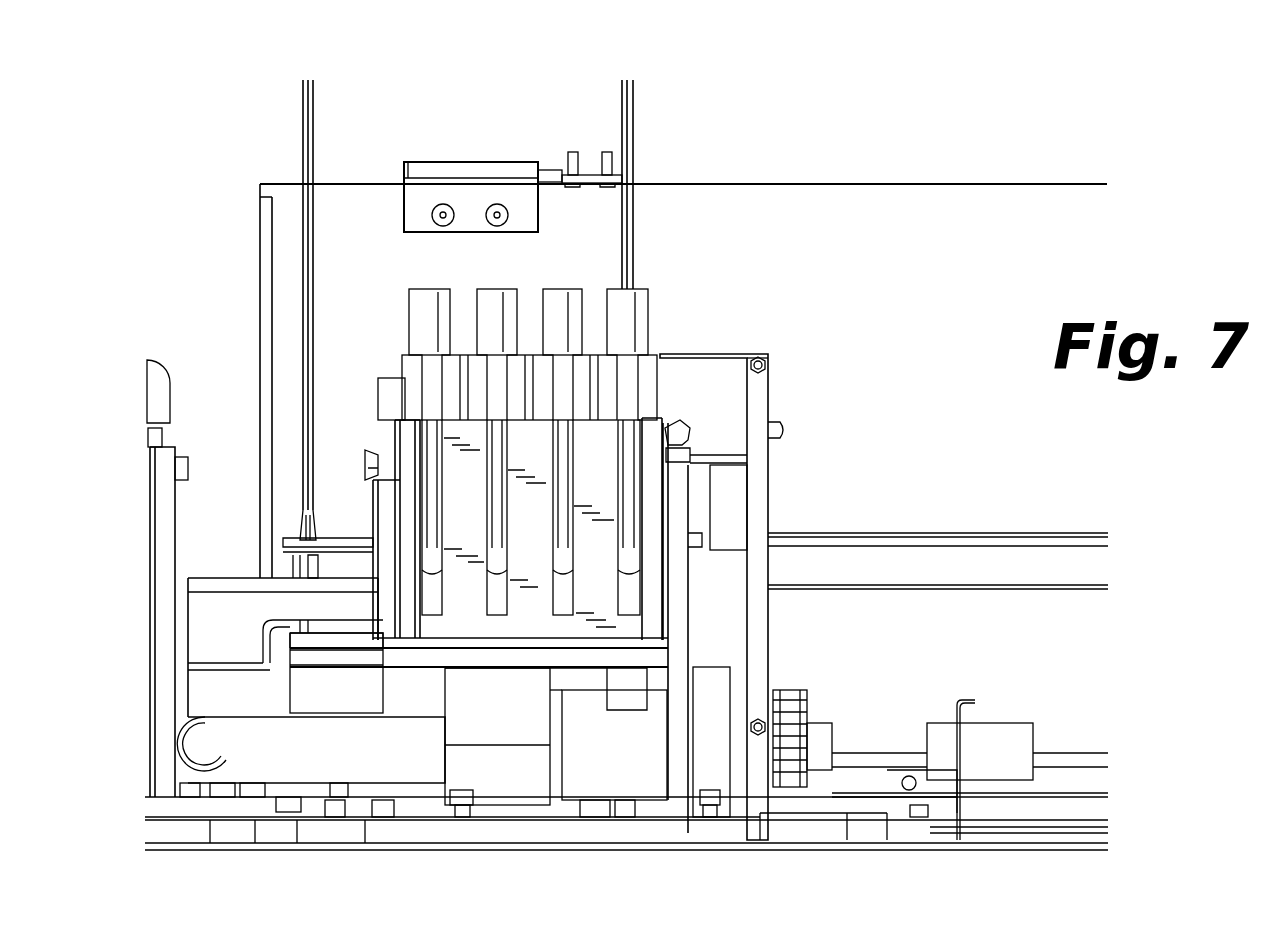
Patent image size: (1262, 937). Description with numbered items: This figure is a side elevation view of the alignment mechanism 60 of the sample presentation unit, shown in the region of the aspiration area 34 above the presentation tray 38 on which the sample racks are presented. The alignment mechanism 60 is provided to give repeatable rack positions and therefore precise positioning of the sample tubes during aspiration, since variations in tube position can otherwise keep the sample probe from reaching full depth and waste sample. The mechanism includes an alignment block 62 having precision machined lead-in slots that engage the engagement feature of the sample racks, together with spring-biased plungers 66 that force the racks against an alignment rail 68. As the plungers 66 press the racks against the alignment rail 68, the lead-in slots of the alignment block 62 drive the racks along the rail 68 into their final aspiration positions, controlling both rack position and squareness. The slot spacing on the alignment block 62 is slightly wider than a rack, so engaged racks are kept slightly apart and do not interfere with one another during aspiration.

The aspiration area 34 is at (592, 229).
The presentation tray 38 is at (660, 663).
The alignment mechanism 60 is at (596, 550).
The alignment block 62 is at (732, 352).
The spring-biased plungers 66 is at (695, 426).
The alignment rail 68 is at (692, 456).